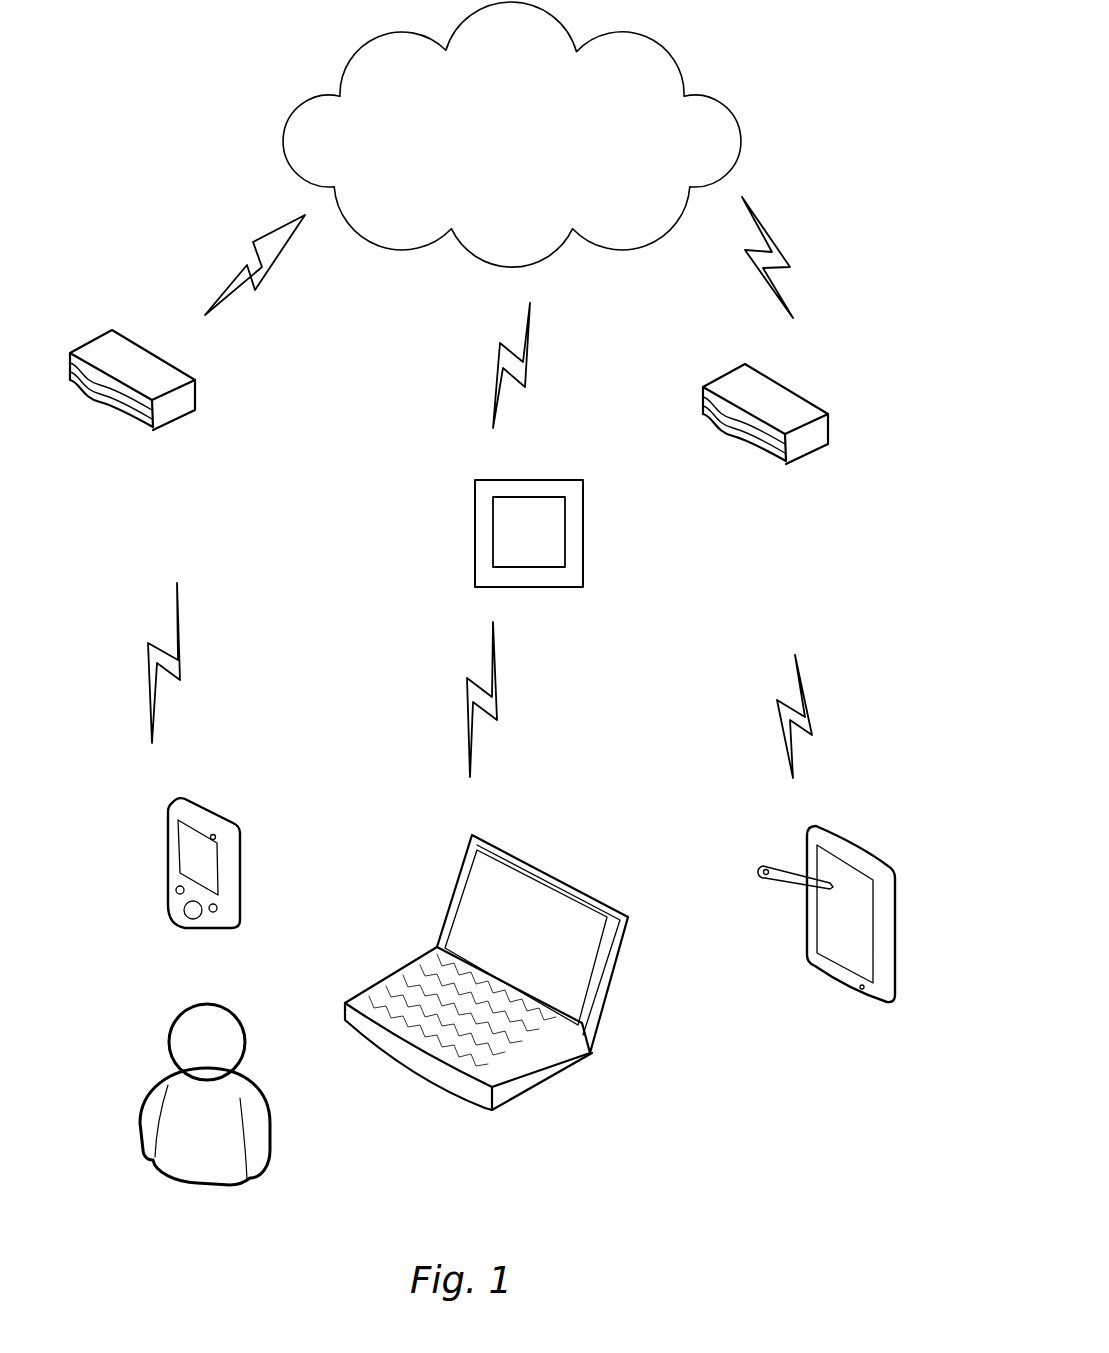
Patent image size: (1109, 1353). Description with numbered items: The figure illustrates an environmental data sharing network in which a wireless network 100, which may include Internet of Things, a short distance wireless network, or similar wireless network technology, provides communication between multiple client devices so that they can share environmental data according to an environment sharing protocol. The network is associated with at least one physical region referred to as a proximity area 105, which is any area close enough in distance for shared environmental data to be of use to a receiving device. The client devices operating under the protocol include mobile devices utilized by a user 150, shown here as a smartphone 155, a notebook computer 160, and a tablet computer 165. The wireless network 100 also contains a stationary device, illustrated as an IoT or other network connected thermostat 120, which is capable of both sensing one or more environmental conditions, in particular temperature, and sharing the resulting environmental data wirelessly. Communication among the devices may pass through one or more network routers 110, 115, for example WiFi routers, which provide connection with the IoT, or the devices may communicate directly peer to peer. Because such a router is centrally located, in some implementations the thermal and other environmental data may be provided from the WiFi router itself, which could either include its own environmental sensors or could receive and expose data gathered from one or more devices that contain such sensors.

The wireless network 100 is at (740, 123).
The proximity area 105 is at (298, 517).
The network router 110 is at (195, 390).
The network router 115 is at (828, 420).
The thermostat 120 is at (583, 532).
The user 150 is at (272, 1143).
The smartphone 155 is at (243, 878).
The notebook computer 160 is at (603, 1007).
The tablet computer 165 is at (895, 923).